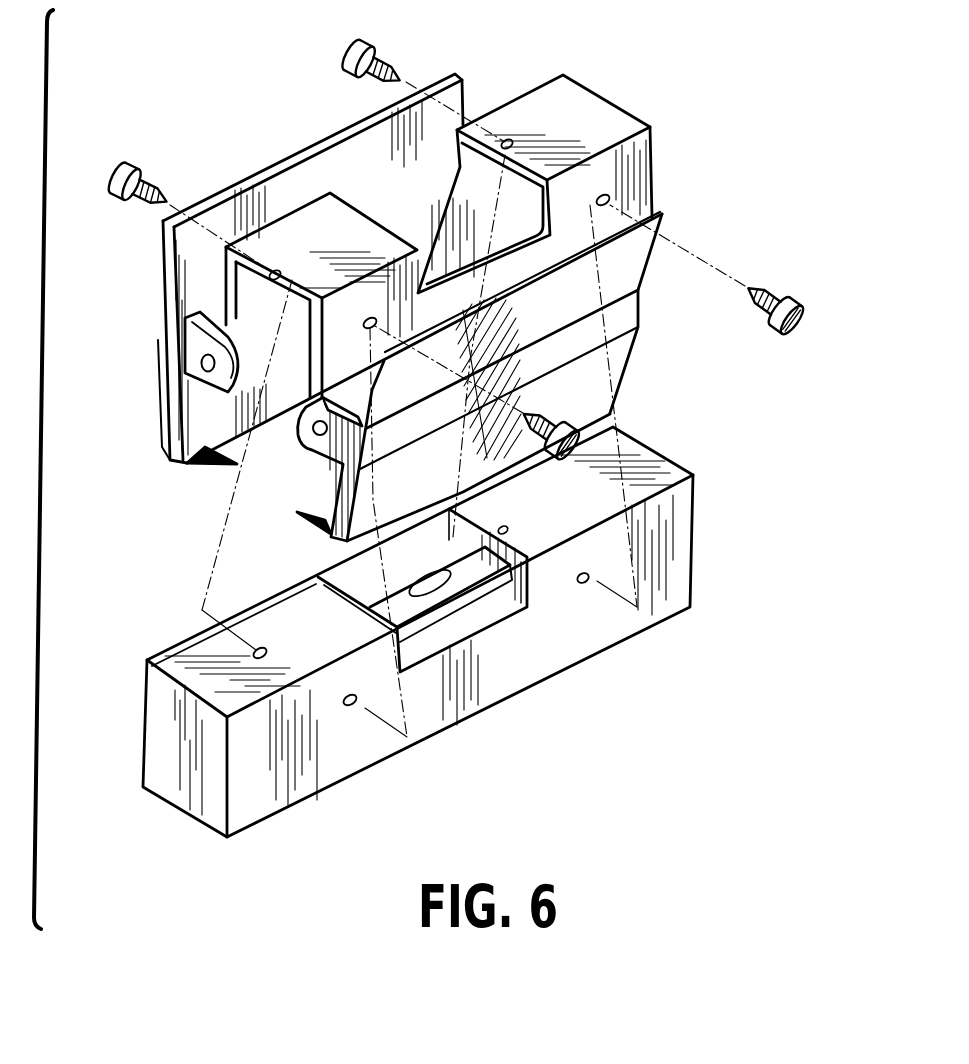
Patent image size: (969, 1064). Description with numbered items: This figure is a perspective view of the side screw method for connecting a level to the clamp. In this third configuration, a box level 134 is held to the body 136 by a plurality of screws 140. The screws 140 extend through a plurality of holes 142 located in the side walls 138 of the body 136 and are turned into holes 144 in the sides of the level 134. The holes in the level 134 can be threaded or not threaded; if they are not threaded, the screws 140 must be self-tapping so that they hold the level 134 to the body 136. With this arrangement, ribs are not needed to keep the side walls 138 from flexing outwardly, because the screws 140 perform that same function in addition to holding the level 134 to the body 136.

The box level 134 is at (532, 665).
The body 136 is at (450, 293).
The side walls 138 is at (655, 152).
The screws 140 is at (360, 50).
The holes 142 is at (506, 140).
The holes 144 is at (510, 528).